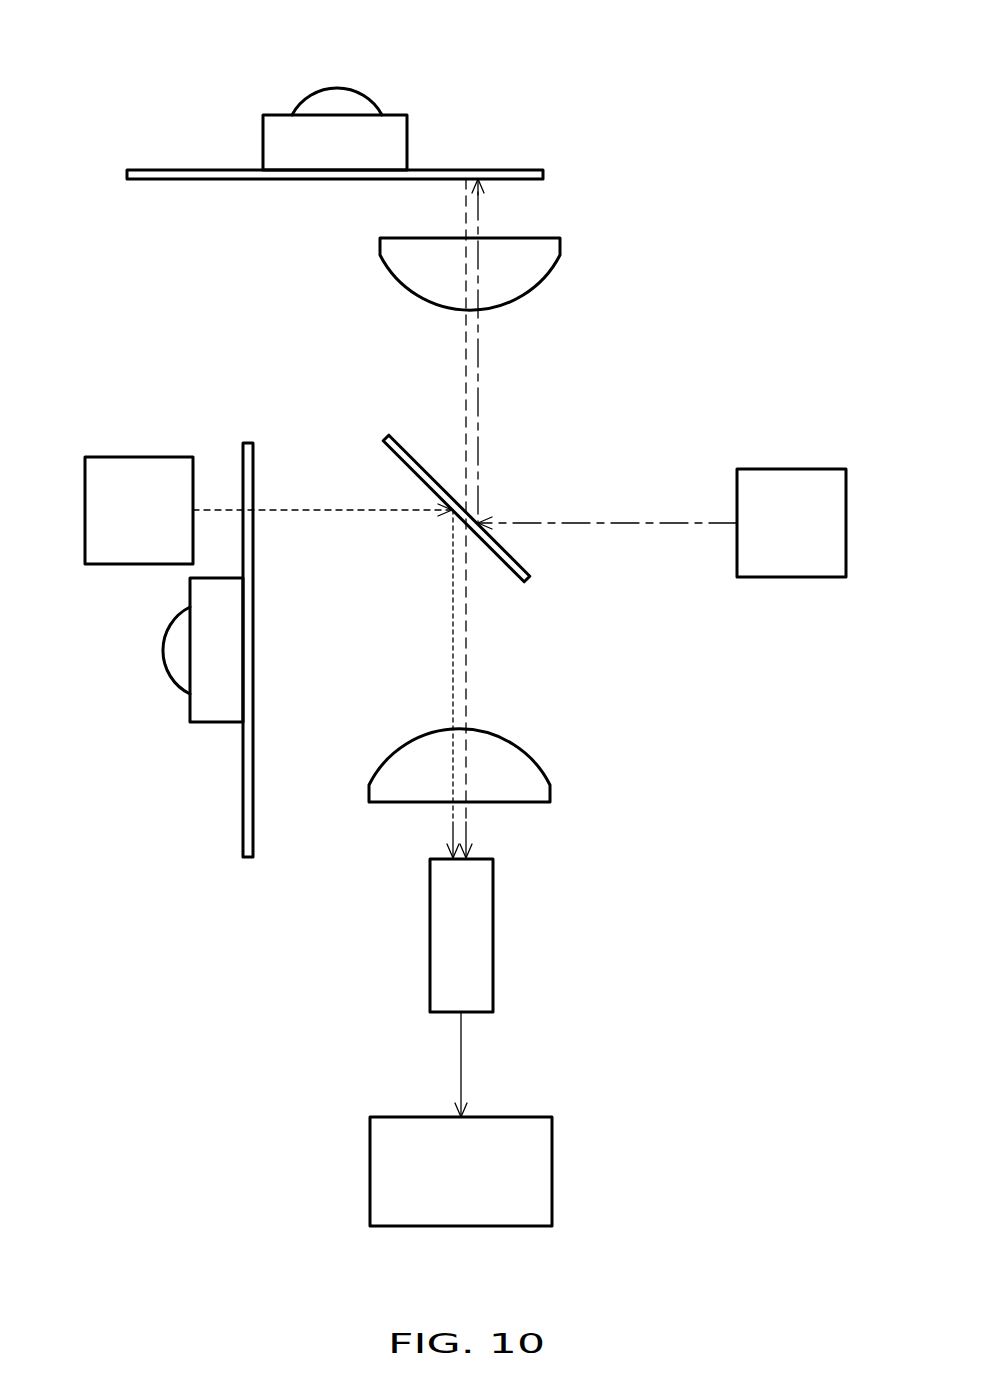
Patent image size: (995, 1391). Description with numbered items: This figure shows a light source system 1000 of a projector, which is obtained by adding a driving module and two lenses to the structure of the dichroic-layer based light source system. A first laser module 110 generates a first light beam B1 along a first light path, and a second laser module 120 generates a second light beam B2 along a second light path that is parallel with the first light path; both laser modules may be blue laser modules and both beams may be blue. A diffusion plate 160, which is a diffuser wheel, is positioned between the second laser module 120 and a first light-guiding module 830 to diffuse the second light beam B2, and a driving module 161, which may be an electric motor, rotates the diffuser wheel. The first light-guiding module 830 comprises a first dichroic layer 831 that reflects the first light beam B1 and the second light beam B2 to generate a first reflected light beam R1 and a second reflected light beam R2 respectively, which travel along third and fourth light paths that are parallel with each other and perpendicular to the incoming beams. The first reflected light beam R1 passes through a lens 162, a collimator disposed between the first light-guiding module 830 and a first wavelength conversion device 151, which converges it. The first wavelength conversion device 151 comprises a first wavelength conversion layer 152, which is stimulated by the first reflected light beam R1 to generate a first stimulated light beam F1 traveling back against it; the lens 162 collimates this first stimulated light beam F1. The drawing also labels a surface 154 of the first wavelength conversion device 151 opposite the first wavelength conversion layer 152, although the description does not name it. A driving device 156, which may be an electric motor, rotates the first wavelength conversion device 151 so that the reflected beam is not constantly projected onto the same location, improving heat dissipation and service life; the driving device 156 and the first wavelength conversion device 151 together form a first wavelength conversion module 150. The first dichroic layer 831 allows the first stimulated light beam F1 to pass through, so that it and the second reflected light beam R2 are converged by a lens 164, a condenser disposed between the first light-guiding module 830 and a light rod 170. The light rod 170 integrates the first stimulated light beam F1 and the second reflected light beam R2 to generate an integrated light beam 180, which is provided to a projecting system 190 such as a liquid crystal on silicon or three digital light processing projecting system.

The light source system 1000 is at (720, 90).
The first wavelength conversion module 150 is at (510, 140).
The first wavelength conversion device 151 is at (127, 175).
The first wavelength conversion layer 152 is at (522, 180).
The top surface of substrate 154 is at (522, 170).
The driving device 156 is at (397, 140).
The lens 162 is at (542, 282).
The lens 164 is at (533, 758).
The first light-guiding module 830 is at (508, 470).
The first dichroic layer 831 is at (383, 438).
The first laser module 110 is at (790, 469).
The second laser module 120 is at (140, 457).
The diffusion plate 160 is at (245, 445).
The driving module 161 is at (215, 710).
The light rod 170 is at (493, 931).
The integrated light beam 180 is at (462, 1050).
The projecting system 190 is at (552, 1171).
The first light beam B1 is at (642, 525).
The second light beam B2 is at (340, 515).
The first reflected light beam R1 is at (479, 350).
The second reflected light beam R2 is at (453, 640).
The first stimulated light beam F1 is at (465, 345).